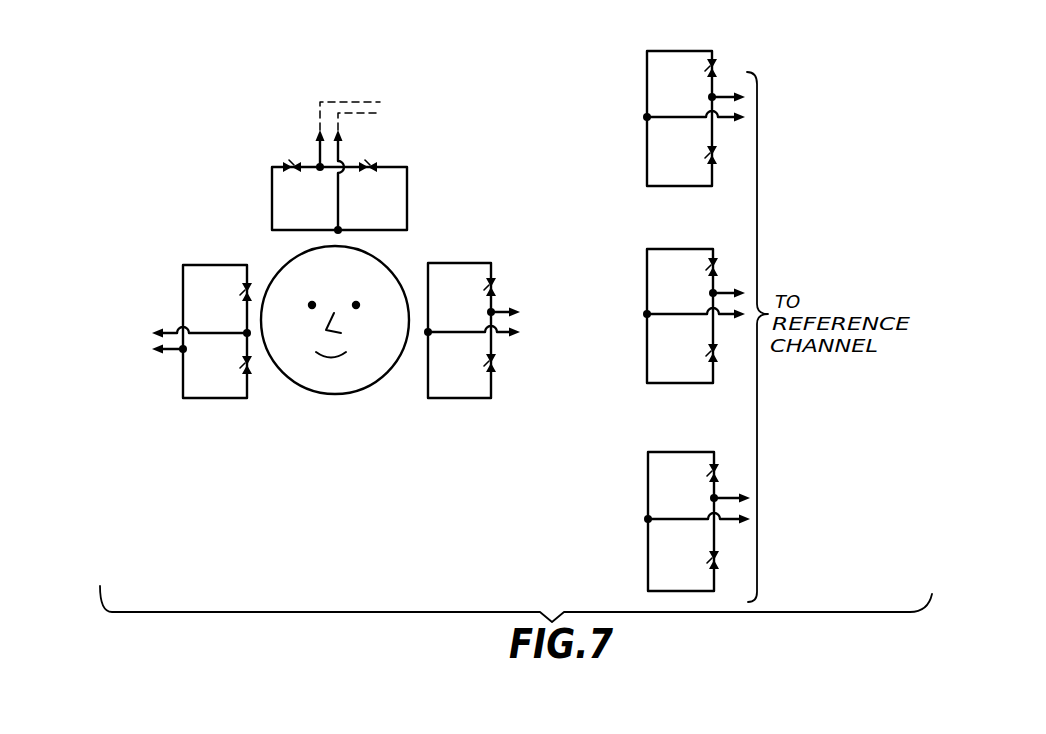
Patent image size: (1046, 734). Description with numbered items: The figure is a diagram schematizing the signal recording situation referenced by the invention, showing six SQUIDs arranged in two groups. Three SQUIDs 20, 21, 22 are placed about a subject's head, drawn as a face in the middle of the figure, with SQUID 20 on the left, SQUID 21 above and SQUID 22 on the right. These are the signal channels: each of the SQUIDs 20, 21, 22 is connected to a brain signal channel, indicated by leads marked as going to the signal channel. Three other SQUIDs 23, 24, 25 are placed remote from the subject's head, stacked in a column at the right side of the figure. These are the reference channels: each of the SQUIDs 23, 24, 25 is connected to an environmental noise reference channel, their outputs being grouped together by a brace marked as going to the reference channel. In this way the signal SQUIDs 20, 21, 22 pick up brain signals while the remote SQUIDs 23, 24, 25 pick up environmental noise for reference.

The SQUID 20 is at (200, 375).
The SQUID 21 is at (288, 180).
The SQUID 22 is at (446, 380).
The SQUID 23 is at (675, 68).
The SQUID 24 is at (668, 270).
The SQUID 25 is at (668, 474).